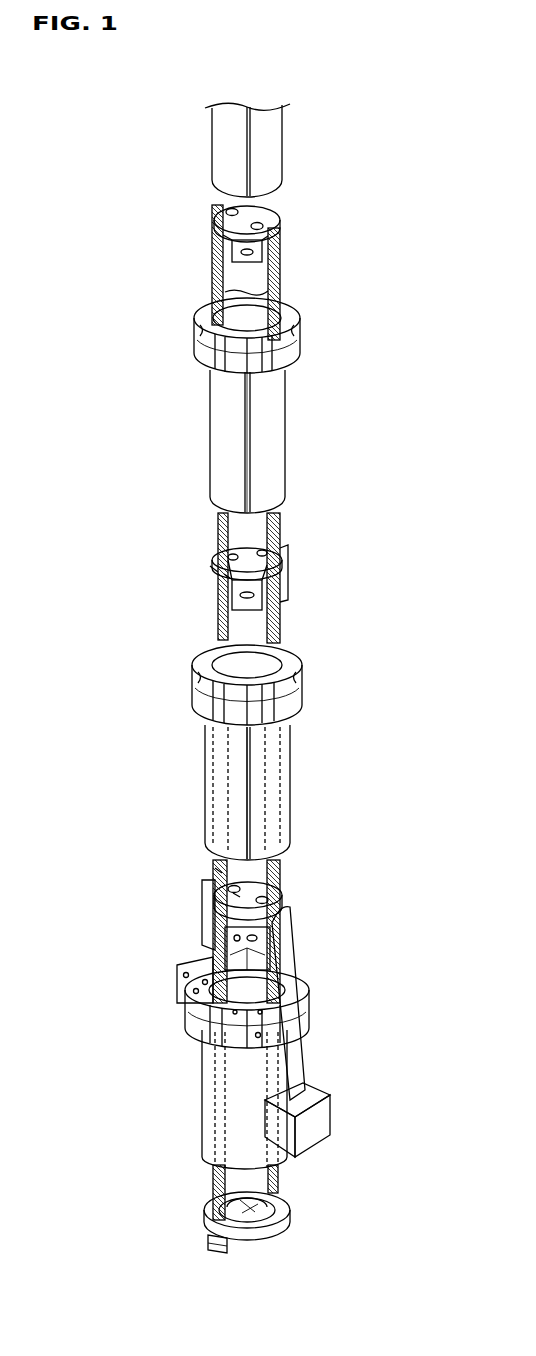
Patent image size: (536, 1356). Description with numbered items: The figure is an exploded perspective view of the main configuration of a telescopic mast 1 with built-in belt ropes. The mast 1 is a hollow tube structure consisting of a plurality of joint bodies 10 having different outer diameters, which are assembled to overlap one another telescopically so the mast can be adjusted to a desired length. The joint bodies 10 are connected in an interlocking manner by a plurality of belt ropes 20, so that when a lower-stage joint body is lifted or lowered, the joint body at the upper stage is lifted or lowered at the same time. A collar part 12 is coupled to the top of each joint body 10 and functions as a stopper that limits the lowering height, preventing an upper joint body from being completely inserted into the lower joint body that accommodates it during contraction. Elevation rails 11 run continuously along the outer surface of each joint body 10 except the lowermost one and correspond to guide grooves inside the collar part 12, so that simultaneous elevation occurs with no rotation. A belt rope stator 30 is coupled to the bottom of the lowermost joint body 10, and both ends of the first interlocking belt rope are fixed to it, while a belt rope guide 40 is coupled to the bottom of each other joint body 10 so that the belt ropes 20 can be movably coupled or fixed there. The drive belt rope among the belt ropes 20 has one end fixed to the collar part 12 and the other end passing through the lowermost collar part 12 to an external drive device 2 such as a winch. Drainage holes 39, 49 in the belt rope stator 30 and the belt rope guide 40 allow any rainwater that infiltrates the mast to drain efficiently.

The telescopic mast 1 is at (176, 107).
The joint body 10 is at (268, 145).
The elevation rail 11 is at (245, 428).
The collar part 12 is at (196, 322).
The belt rope 20 is at (284, 552).
The belt rope guide 40 is at (215, 556).
The drainage hole 49 is at (225, 576).
The external drive device 2 is at (333, 1117).
The belt rope stator 30 is at (252, 1200).
The drainage hole 39 is at (272, 1236).